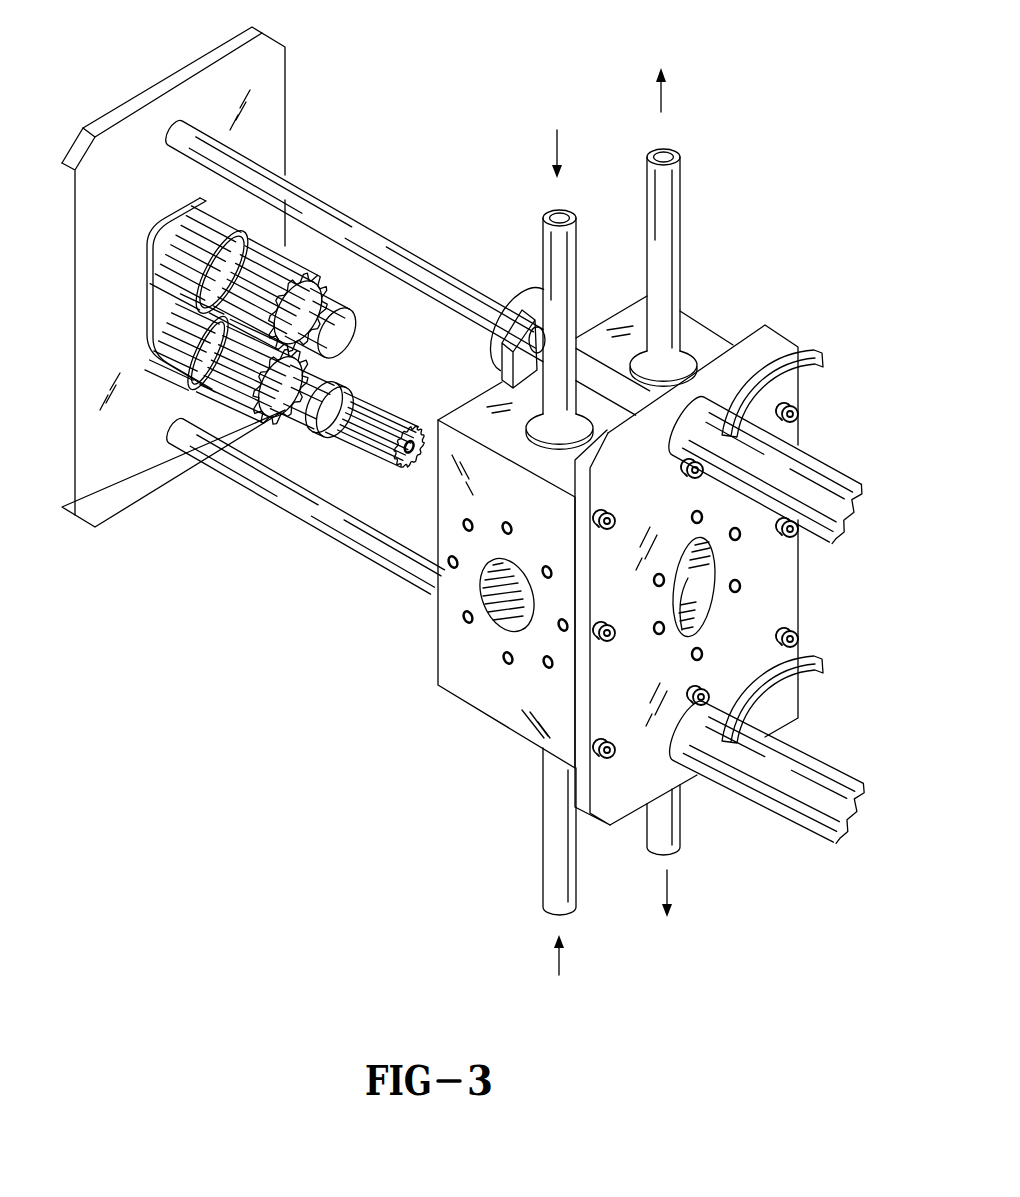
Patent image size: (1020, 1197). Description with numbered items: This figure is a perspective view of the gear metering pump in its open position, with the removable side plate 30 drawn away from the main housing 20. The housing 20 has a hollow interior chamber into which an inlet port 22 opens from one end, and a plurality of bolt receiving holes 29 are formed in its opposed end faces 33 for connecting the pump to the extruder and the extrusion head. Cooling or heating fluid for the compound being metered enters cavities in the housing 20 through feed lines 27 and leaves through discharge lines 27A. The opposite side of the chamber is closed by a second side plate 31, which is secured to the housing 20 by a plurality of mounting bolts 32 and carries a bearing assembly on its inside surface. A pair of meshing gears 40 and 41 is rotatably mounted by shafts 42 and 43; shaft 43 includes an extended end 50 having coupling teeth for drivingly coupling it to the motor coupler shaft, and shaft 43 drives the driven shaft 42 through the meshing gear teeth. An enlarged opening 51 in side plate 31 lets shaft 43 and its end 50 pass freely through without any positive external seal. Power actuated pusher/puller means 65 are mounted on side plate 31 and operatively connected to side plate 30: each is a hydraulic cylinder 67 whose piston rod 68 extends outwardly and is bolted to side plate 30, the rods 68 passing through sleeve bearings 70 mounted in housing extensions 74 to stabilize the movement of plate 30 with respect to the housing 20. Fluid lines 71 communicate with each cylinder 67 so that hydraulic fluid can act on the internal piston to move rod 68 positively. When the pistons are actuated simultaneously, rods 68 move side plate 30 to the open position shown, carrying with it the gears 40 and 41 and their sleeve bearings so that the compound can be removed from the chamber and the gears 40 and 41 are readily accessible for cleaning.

The main housing 20 is at (476, 711).
The inlet port 22 is at (520, 613).
The feed lines 27 is at (548, 237).
The discharge lines 27A is at (675, 205).
The bolt receiving holes 29 is at (462, 527).
The side plate 30 is at (276, 88).
The second side plate 31 is at (783, 710).
The mounting bolts 32 is at (800, 415).
The end faces 33 is at (511, 723).
The meshing gear 40 is at (292, 252).
The meshing gear 41 is at (235, 410).
The gear shaft 42 is at (340, 292).
The gear shaft 43 is at (308, 432).
The extended end 50 is at (387, 410).
The enlarged opening 51 is at (708, 574).
The power actuated pusher/puller means 65 is at (824, 855).
The hydraulic cylinder 67 is at (832, 497).
The piston rod 68 is at (360, 230).
The sleeve bearings 70 is at (537, 337).
The fluid lines 71 is at (813, 352).
The housing extensions 74 is at (535, 307).